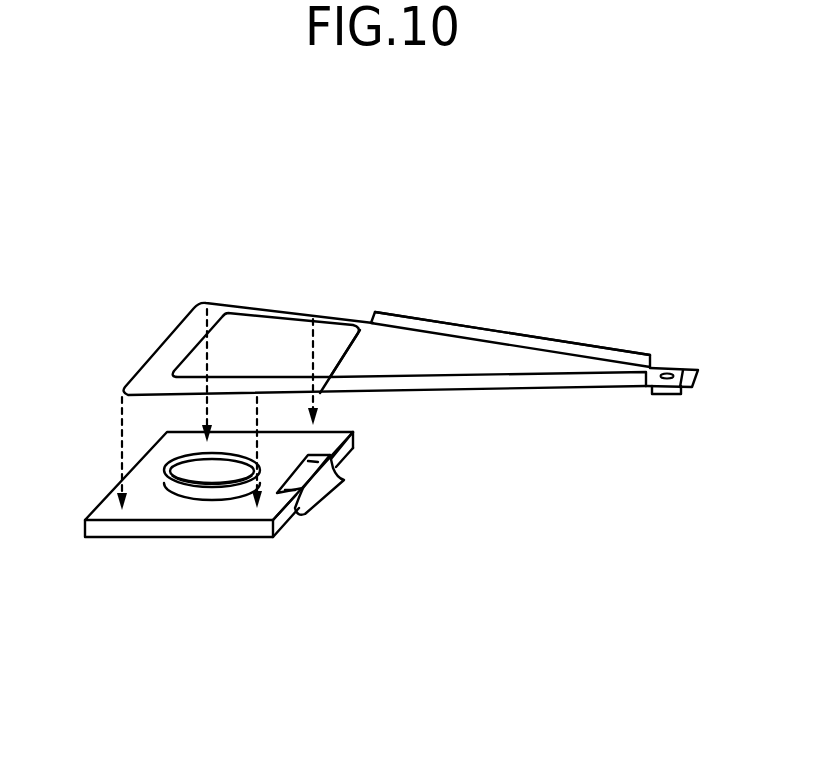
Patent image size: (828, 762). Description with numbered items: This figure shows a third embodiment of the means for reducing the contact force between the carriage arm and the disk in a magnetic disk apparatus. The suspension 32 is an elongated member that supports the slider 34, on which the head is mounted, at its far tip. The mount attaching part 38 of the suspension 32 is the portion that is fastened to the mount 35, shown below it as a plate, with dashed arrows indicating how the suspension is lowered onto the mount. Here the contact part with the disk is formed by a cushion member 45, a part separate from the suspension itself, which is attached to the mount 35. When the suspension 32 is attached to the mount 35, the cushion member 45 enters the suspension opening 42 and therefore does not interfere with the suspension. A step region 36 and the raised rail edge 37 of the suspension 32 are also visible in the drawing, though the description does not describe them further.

The suspension 32 is at (438, 353).
The slider 34 is at (665, 395).
The mount 35 is at (177, 507).
The bent step portion 36 is at (350, 318).
The flange rail 37 is at (570, 343).
The mount attaching part 38 is at (212, 314).
The suspension opening 42 is at (328, 342).
The cushion member 45 is at (330, 497).